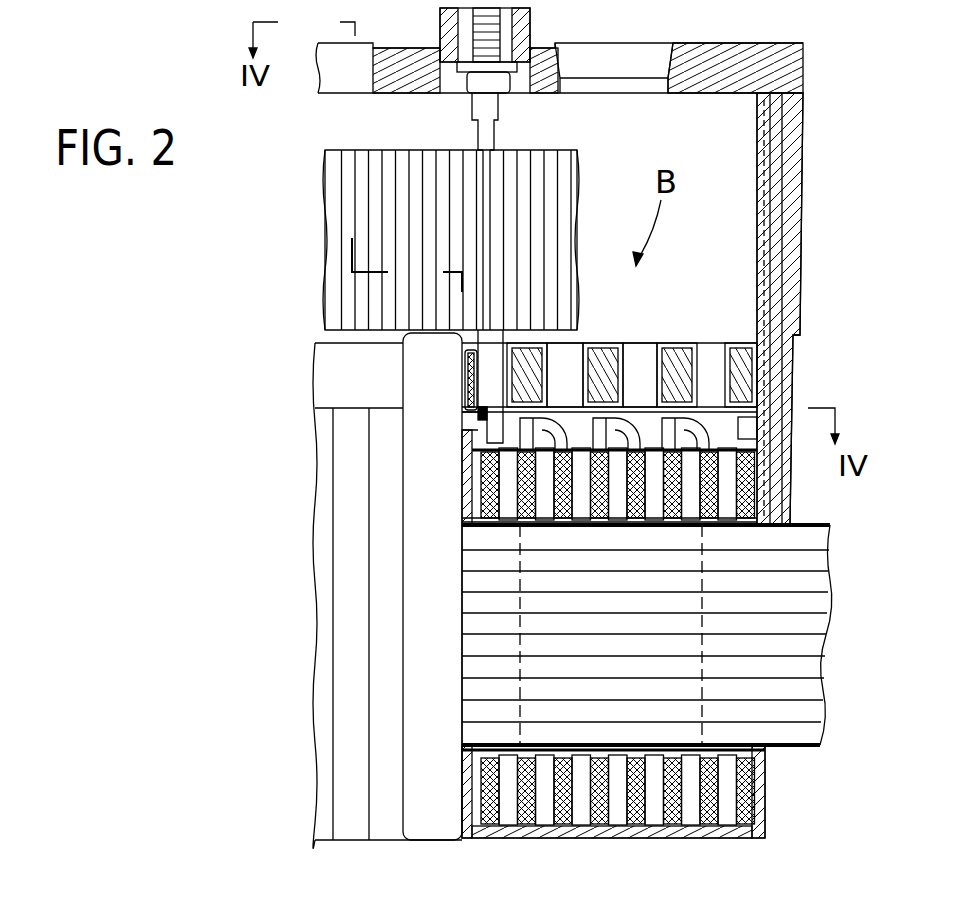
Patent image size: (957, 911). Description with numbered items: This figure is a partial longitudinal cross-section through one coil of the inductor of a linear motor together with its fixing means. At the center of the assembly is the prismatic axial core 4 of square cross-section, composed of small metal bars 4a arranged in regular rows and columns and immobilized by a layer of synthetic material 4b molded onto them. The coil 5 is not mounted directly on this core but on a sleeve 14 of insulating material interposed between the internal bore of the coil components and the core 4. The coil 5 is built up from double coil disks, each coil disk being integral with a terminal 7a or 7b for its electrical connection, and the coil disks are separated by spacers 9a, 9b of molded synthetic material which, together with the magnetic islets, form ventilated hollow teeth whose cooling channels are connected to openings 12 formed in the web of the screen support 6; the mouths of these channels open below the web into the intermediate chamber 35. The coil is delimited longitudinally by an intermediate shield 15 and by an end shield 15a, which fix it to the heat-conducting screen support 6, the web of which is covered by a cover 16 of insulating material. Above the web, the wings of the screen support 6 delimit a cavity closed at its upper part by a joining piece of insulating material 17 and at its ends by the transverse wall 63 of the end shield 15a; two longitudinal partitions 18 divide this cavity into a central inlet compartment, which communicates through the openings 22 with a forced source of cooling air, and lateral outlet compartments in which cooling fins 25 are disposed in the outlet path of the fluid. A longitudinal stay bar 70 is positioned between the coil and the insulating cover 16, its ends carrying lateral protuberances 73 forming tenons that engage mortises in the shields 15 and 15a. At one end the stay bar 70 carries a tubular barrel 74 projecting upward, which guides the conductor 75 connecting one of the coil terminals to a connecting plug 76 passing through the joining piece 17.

The prismatic axial core 4 is at (830, 604).
The metal bars 4a is at (792, 674).
The layer of synthetic material 4b is at (812, 525).
The coil 5 is at (745, 493).
The screen support 6 is at (677, 345).
The terminal 7a is at (577, 530).
The terminal 7b is at (612, 530).
The spacer 9a is at (722, 460).
The spacer 9b is at (575, 812).
The opening 12 is at (568, 360).
The sleeve 14 is at (634, 528).
The intermediate shield 15 is at (437, 825).
The end shield 15a is at (798, 336).
The cover 16 is at (710, 378).
The joining piece 17 is at (740, 60).
The longitudinal partitions 18 is at (722, 207).
The openings 22 is at (600, 57).
The cooling fins 25 is at (345, 195).
The intermediate chamber 35 is at (492, 430).
The transverse wall 63 is at (782, 222).
The stay bar 70 is at (640, 418).
The lateral protuberances 73 is at (748, 425).
The tubular barrel 74 is at (493, 372).
The conductor 75 is at (490, 228).
The connecting plug 76 is at (500, 40).